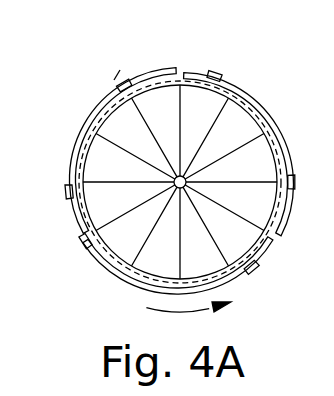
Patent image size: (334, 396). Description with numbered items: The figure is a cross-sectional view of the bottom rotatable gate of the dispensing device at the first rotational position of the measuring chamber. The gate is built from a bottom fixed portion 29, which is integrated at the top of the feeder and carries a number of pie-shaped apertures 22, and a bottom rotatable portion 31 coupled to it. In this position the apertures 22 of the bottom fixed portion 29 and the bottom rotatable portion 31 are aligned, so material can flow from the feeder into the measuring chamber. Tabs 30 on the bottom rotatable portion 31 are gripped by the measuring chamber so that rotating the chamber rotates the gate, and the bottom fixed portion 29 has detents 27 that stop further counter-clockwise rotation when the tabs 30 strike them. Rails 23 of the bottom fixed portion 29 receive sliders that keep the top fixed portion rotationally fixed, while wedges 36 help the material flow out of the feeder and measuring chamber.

The apertures 22 is at (255, 160).
The rails 23 is at (82, 237).
The detents 27 is at (222, 75).
The bottom fixed portion 29 is at (274, 107).
The tabs 30 is at (115, 72).
The bottom rotatable portion 31 is at (75, 185).
The wedges 36 is at (232, 223).